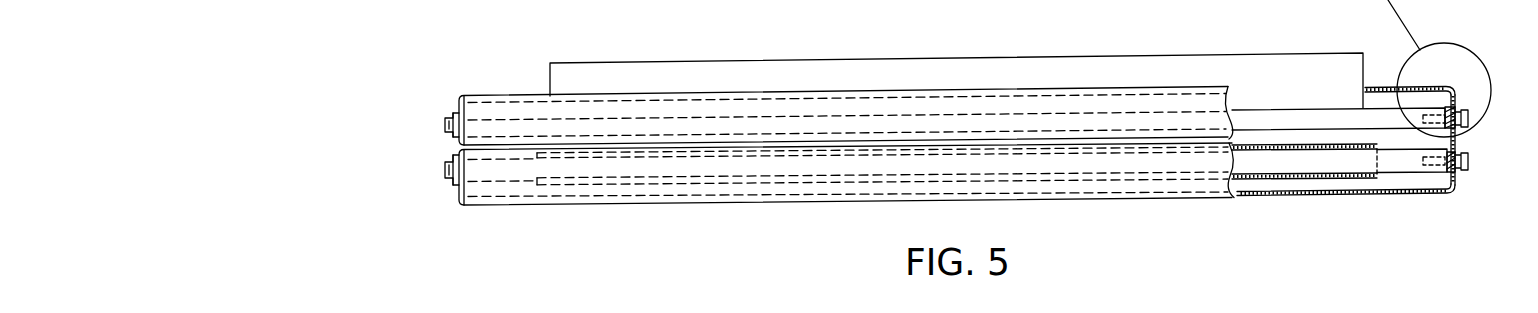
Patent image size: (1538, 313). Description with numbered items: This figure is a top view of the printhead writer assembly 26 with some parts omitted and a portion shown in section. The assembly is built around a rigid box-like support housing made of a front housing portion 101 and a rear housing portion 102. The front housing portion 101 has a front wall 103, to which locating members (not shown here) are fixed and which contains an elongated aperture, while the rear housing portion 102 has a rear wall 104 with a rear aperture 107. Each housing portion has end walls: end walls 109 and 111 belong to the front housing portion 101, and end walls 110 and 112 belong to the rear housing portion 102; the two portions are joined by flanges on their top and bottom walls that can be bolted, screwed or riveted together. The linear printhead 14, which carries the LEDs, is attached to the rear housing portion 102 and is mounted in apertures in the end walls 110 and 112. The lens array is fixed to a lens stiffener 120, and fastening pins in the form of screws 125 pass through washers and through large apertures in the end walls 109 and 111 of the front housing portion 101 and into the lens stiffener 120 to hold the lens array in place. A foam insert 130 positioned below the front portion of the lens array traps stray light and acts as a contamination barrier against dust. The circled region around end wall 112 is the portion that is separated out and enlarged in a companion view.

The printhead writer assembly 26 is at (418, 125).
The linear printhead 14 is at (1250, 118).
The front housing portion 101 is at (488, 193).
The rear housing portion 102 is at (488, 112).
The front wall 103 is at (1402, 195).
The rear wall 104 is at (1385, 87).
The rear aperture 107 is at (1365, 85).
The end wall 109 is at (458, 195).
The end wall 110 is at (458, 103).
The end wall 111 is at (1458, 184).
The end wall 112 is at (1463, 90).
The lens stiffener 120 is at (1277, 167).
The screws 125 is at (445, 127).
The foam insert 130 is at (1340, 180).